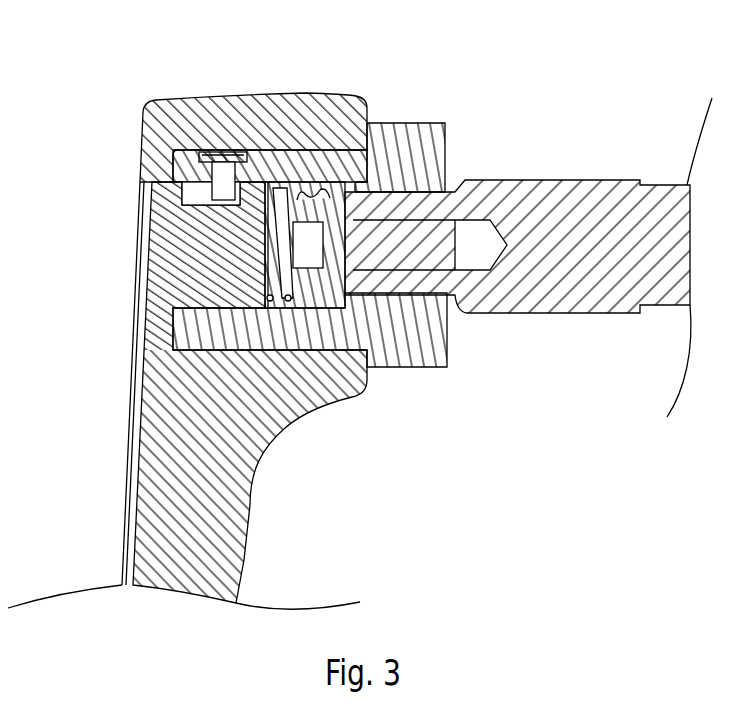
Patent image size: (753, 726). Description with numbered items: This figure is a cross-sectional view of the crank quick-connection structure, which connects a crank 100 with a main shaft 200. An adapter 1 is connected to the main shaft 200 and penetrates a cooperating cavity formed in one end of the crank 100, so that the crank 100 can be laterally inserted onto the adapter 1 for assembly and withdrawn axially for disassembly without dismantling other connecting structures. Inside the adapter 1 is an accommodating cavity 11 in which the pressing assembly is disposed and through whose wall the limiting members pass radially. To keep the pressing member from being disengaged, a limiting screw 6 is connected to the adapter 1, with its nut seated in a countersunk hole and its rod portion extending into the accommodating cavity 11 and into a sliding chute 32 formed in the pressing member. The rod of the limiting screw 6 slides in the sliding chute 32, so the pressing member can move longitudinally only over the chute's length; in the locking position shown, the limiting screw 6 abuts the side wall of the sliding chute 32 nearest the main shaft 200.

The crank 100 is at (296, 104).
The adapter 1 is at (433, 127).
The main shaft 200 is at (567, 293).
The accommodating cavity 11 is at (305, 300).
The sliding chute 32 is at (192, 195).
The limiting screw 6 is at (225, 177).